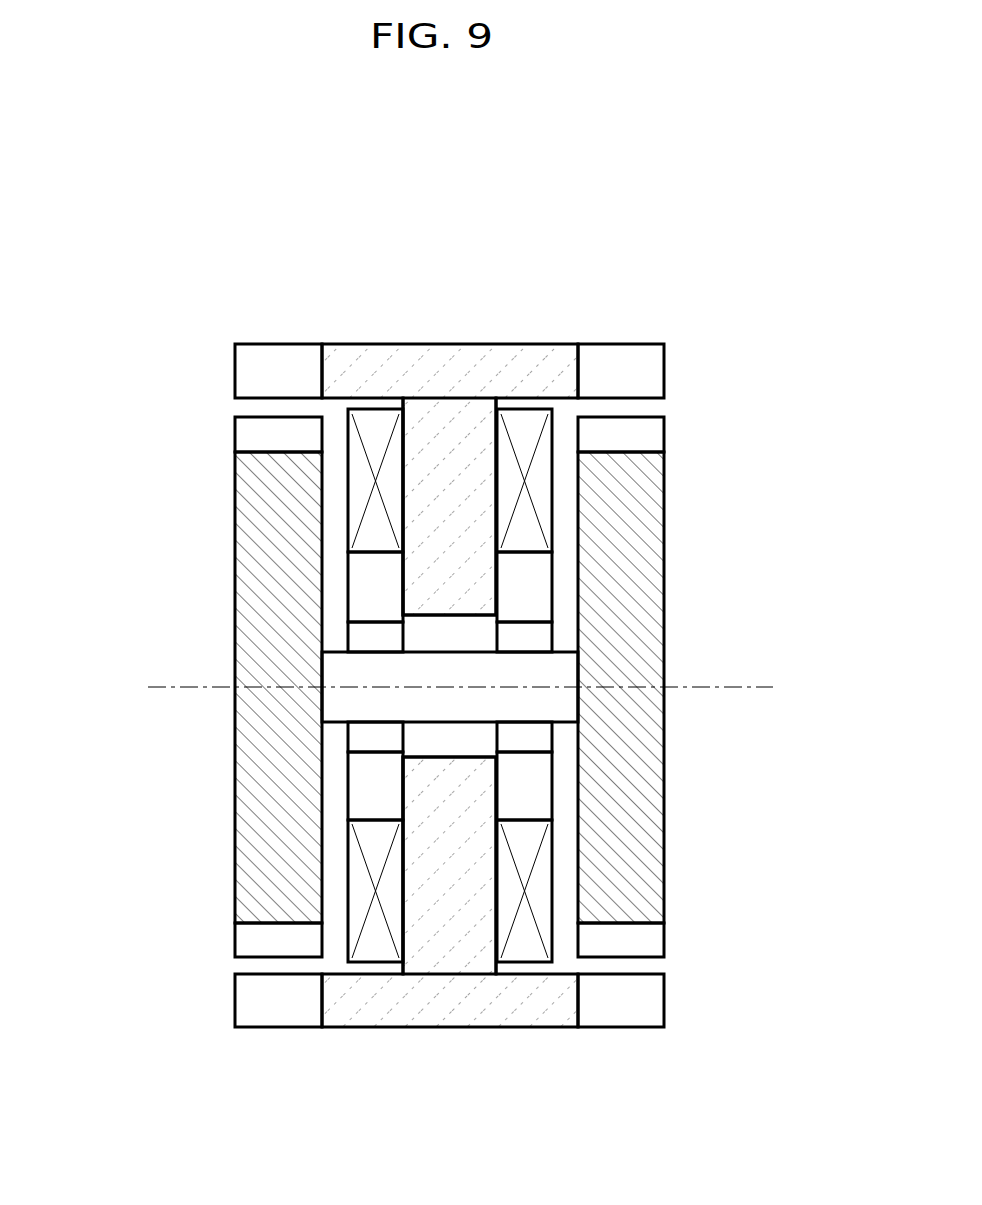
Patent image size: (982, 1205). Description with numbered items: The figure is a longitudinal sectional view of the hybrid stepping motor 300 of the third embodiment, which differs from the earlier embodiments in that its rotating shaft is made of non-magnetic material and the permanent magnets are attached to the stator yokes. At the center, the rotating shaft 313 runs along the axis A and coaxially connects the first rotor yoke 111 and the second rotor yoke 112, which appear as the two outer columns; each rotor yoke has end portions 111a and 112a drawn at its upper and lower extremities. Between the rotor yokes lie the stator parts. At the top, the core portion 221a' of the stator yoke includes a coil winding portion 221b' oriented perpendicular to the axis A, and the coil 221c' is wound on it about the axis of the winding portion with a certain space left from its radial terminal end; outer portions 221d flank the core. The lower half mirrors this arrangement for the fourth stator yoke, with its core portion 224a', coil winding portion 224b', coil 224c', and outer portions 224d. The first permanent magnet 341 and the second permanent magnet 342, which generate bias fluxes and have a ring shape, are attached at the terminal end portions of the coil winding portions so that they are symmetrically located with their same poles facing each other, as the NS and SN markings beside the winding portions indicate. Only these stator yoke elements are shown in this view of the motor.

The hybrid stepping motor 300 is at (138, 255).
The first rotor yoke 111 is at (235, 749).
The end portion of first outer yoke 111a is at (245, 432).
The second rotor yoke 112 is at (664, 752).
The end portion of second outer yoke 112a is at (657, 432).
The core portion 221a' is at (456, 403).
The coil winding portion 221b' is at (304, 506).
The coil 221c' is at (450, 371).
The upper yoke end portion 221d is at (272, 355).
The core portion 224a' is at (453, 972).
The coil winding portion 224b' is at (304, 865).
The coil 224c' is at (450, 1004).
The lower yoke end portion 224d is at (272, 1017).
The first permanent magnet 341 is at (353, 612).
The second permanent magnet 342 is at (548, 565).
The rotating shaft 313 is at (548, 645).